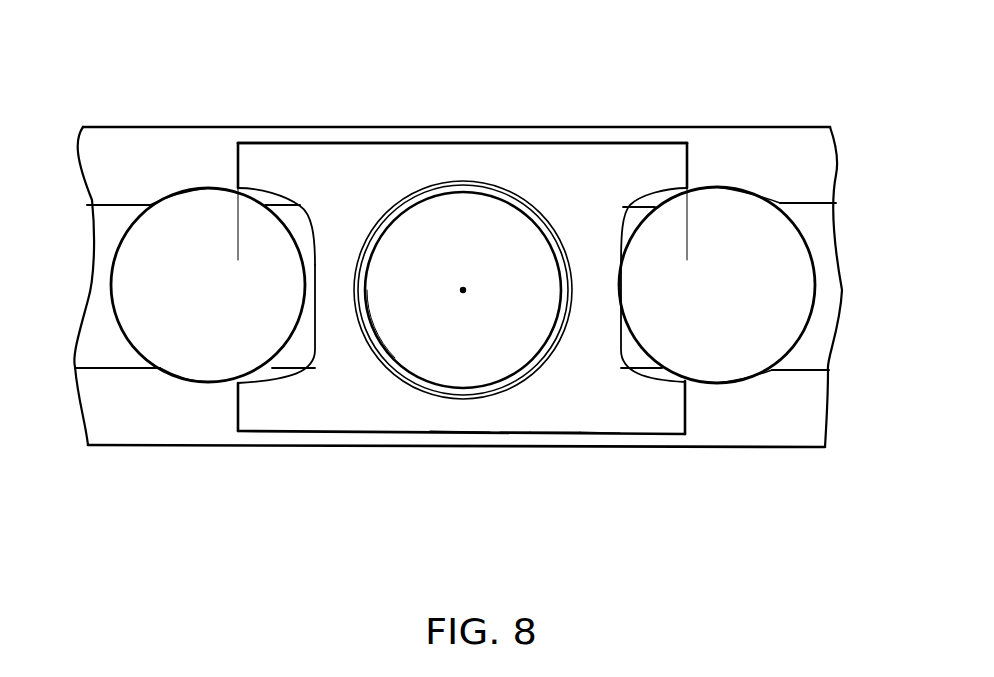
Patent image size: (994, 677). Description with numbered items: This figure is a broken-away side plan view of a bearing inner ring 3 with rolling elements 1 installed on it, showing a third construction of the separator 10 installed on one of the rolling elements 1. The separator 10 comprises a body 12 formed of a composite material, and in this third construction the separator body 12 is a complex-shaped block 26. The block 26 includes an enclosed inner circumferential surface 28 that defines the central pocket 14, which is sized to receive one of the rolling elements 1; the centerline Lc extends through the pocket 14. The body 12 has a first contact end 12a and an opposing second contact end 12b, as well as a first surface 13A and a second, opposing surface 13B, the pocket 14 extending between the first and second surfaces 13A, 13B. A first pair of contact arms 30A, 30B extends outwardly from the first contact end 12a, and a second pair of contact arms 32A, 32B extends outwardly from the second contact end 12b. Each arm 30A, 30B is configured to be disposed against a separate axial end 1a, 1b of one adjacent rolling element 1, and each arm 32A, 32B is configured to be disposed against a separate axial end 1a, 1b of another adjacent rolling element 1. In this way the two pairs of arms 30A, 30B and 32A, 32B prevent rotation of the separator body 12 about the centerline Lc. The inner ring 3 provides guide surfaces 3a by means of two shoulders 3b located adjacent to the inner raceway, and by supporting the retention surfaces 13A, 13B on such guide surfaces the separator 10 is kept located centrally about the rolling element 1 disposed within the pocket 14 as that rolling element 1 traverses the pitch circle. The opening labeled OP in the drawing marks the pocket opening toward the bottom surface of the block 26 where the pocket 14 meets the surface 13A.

The separator 10 is at (378, 118).
The body 12 is at (498, 132).
The first contact end 12a is at (308, 267).
The second contact end 12b is at (620, 287).
The rolling element 1 is at (503, 217).
The axial end of rolling element 1a is at (207, 387).
The axial end of rolling element 1b is at (200, 187).
The inner ring 3 is at (810, 447).
The guide surface 3a is at (812, 183).
The shoulder 3b is at (808, 128).
The enclosed inner circumferential surface 28 is at (398, 217).
The complex-shaped block 26 is at (552, 420).
The central pocket 14 is at (392, 350).
The pocket opening OP is at (459, 438).
The first surface 13A is at (512, 423).
The second surface 13B is at (606, 418).
The contact arm 30A is at (265, 415).
The contact arm 30B is at (268, 160).
The contact arm 32A is at (663, 415).
The contact arm 32B is at (663, 160).
The centerline Lc is at (463, 290).